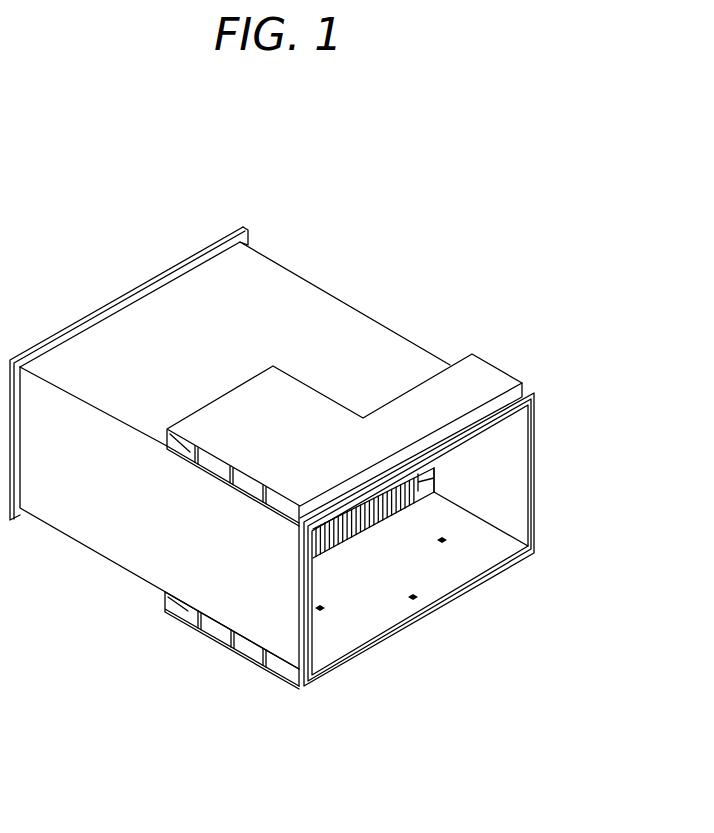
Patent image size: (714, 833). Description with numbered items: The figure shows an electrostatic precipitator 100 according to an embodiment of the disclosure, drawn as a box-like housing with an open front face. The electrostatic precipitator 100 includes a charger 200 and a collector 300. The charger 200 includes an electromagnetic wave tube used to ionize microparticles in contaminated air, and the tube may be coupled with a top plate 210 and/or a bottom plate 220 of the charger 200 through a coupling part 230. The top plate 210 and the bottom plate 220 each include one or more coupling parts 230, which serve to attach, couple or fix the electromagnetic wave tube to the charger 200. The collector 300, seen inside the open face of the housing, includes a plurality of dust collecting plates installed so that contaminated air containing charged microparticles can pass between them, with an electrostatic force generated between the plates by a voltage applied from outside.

The electrostatic precipitator 100 is at (283, 151).
The charger 200 is at (292, 565).
The top plate 210 is at (273, 506).
The bottom plate 220 is at (262, 660).
The coupling part 230 is at (320, 608).
The collector 300 is at (434, 473).